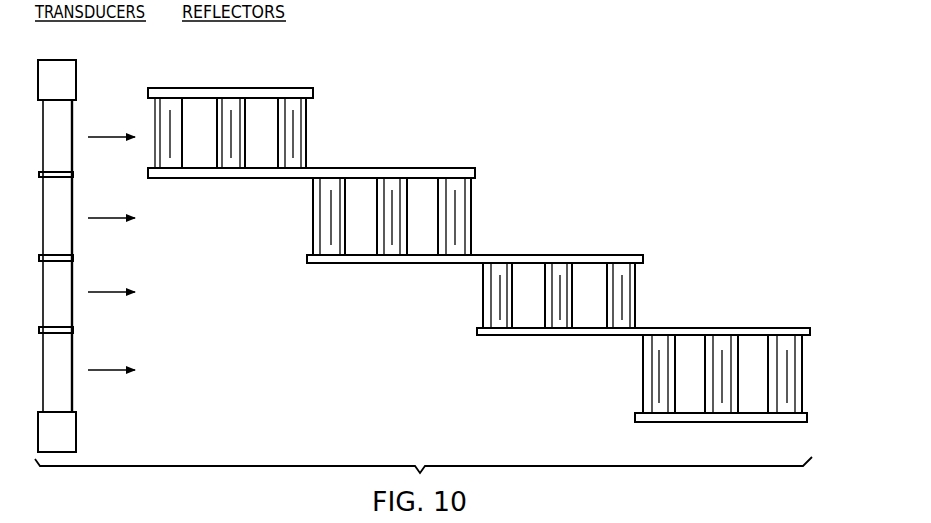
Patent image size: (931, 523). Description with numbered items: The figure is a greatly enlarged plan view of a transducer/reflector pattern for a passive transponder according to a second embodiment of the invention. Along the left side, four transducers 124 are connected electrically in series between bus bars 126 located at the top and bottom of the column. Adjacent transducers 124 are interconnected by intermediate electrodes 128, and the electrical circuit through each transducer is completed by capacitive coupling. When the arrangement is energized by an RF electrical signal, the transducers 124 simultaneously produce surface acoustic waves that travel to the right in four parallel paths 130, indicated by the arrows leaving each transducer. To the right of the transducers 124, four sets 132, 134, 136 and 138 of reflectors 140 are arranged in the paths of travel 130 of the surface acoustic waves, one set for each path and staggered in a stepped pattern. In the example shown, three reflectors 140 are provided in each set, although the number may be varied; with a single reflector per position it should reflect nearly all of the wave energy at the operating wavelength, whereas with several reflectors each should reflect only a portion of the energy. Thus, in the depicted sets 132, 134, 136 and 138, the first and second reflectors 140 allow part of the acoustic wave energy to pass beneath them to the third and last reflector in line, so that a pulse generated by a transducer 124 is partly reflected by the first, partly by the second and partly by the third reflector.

The transducer 124 is at (63, 148).
The bus bar 126 is at (64, 72).
The intermediate electrode 128 is at (74, 175).
The parallel path 130 is at (115, 134).
The first set of reflectors 132 is at (311, 103).
The second set of reflectors 134 is at (491, 207).
The third set of reflectors 136 is at (653, 286).
The fourth set of reflectors 138 is at (629, 377).
The reflector 140 is at (296, 108).